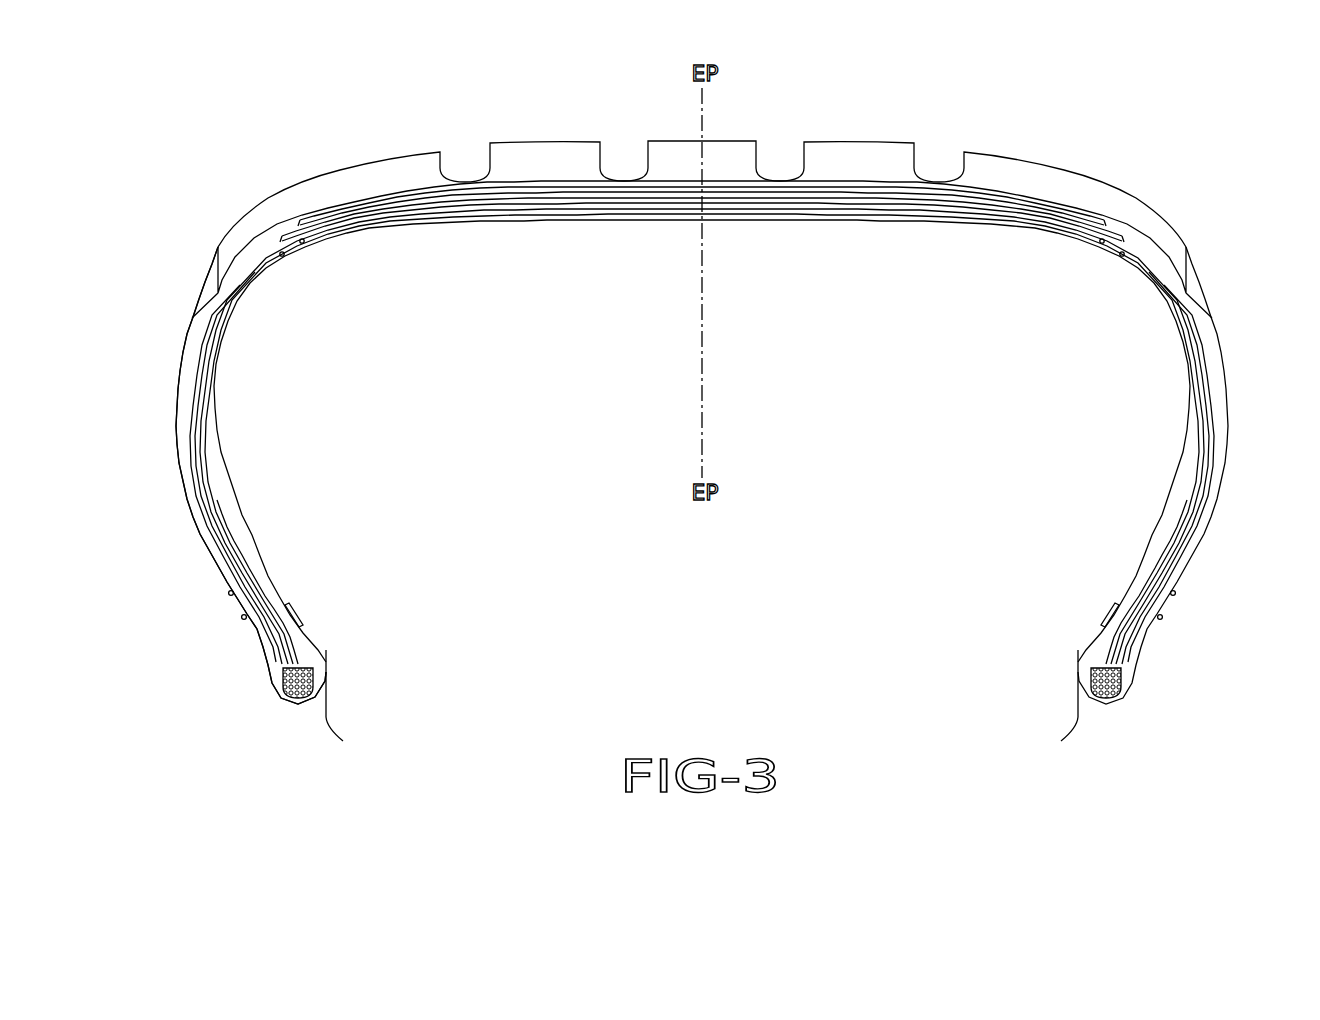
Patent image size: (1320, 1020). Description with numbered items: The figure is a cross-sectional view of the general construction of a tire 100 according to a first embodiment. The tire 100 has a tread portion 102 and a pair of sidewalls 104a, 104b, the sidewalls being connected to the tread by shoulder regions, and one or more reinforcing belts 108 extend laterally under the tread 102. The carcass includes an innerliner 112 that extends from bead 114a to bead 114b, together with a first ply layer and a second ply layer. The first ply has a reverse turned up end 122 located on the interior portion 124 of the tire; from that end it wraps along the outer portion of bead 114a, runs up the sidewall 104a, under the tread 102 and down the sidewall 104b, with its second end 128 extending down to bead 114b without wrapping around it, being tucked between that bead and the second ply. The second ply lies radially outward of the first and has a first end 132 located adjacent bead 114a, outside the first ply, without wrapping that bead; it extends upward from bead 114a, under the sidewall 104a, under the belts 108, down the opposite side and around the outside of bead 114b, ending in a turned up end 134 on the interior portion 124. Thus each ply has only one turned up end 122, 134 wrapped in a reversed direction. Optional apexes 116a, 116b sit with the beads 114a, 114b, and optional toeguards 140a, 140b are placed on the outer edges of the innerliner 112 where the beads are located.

The tire 100 is at (206, 590).
The tread portion 102 is at (853, 142).
The sidewall 104a is at (1230, 408).
The sidewall 104b is at (174, 408).
The reinforcing belt 108 is at (357, 208).
The innerliner 112 is at (590, 222).
The bead 114a is at (1094, 682).
The bead 114b is at (310, 682).
The apex 116a is at (1149, 575).
The apex 116b is at (255, 575).
The turned up end 122 is at (1112, 618).
The interior portion 124 is at (1086, 488).
The second end 128 is at (283, 676).
The first end 132 is at (1121, 676).
The turned up end 134 is at (292, 618).
The toeguard 140a is at (1064, 735).
The toeguard 140b is at (340, 735).